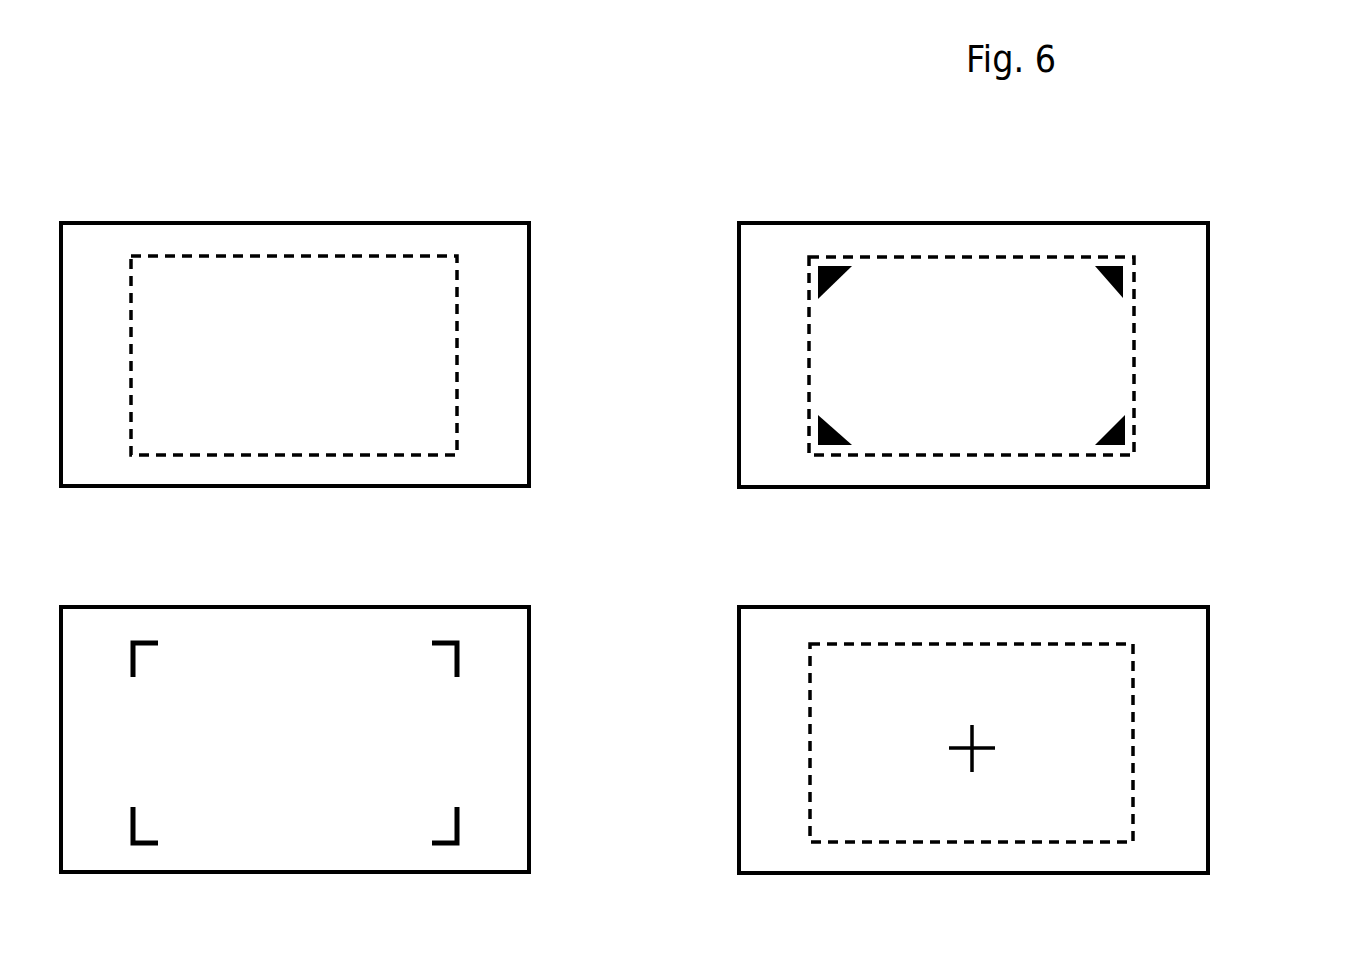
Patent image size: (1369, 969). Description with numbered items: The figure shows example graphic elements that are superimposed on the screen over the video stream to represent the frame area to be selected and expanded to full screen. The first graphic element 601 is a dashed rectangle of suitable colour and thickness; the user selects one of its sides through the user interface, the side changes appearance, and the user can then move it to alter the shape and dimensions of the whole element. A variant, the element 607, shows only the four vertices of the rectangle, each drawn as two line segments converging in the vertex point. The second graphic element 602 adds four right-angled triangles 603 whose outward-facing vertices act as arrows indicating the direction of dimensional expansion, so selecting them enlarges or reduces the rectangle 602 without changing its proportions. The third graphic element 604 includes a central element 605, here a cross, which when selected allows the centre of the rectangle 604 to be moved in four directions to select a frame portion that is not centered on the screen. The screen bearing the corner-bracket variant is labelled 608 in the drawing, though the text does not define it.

The graphic element 601 is at (529, 375).
The graphic element 602 is at (1208, 423).
The right-angled triangles 603 is at (1118, 288).
The graphic element 604 is at (1208, 805).
The central element 605 is at (995, 748).
The element 607 is at (458, 668).
The display screen 608 is at (529, 810).